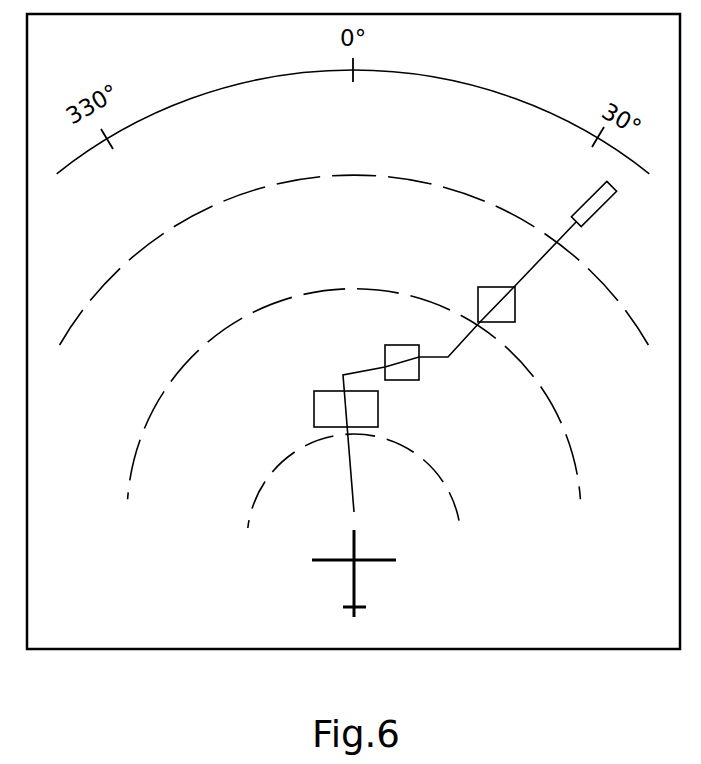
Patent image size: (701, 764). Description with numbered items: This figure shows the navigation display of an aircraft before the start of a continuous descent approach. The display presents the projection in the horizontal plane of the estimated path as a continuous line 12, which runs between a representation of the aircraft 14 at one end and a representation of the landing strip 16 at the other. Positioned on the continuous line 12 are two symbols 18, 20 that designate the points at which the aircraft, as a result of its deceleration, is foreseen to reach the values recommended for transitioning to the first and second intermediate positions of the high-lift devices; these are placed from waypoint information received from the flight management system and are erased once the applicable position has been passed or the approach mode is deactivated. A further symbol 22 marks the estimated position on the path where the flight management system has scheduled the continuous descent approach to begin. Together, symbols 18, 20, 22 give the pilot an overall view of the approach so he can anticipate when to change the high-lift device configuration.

The continuous line 12 is at (527, 268).
The representation of the aircraft 14 is at (352, 580).
The representation of the landing strip 16 is at (583, 203).
The symbol for transition to first intermediate position of the high-lift devices 18 is at (420, 380).
The symbol for transition to second intermediate position of the high-lift devices 20 is at (515, 305).
The symbol of the estimated continuous descent approach start position 22 is at (314, 402).